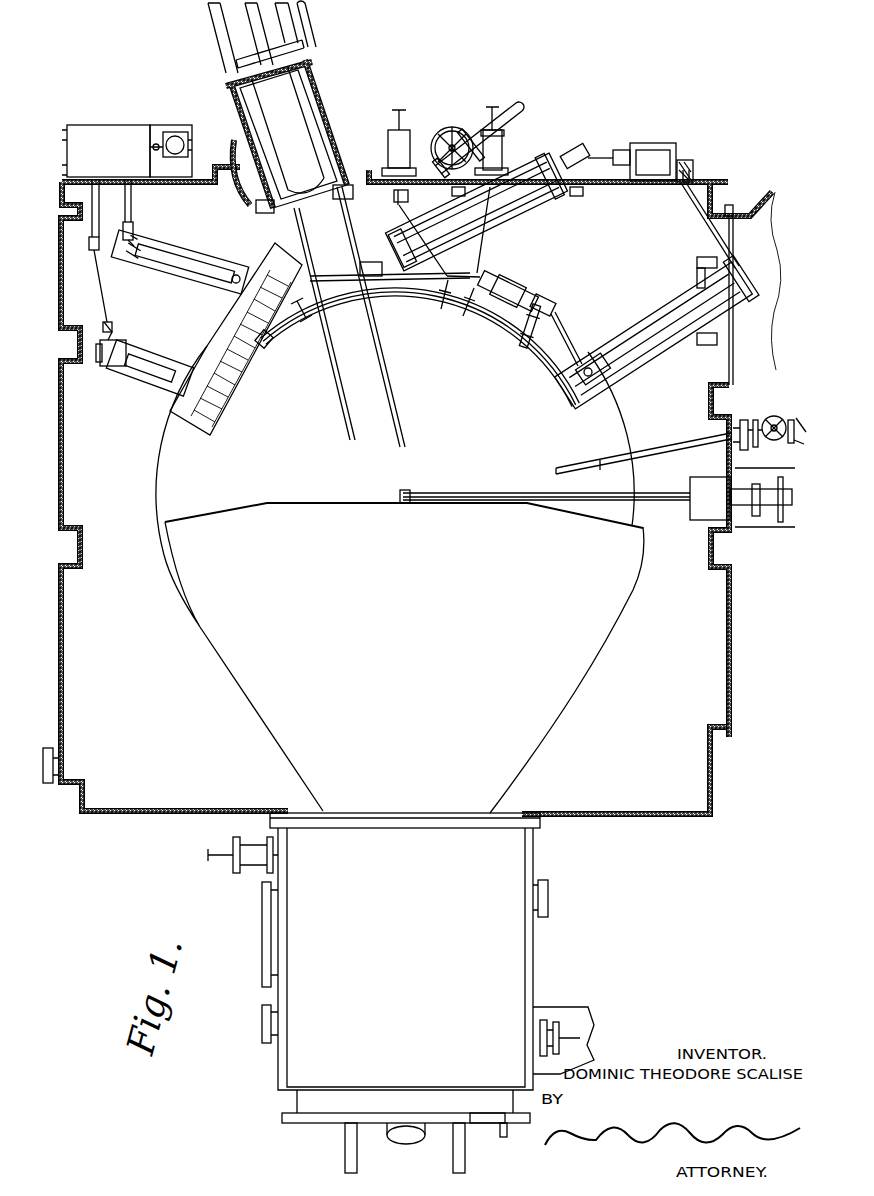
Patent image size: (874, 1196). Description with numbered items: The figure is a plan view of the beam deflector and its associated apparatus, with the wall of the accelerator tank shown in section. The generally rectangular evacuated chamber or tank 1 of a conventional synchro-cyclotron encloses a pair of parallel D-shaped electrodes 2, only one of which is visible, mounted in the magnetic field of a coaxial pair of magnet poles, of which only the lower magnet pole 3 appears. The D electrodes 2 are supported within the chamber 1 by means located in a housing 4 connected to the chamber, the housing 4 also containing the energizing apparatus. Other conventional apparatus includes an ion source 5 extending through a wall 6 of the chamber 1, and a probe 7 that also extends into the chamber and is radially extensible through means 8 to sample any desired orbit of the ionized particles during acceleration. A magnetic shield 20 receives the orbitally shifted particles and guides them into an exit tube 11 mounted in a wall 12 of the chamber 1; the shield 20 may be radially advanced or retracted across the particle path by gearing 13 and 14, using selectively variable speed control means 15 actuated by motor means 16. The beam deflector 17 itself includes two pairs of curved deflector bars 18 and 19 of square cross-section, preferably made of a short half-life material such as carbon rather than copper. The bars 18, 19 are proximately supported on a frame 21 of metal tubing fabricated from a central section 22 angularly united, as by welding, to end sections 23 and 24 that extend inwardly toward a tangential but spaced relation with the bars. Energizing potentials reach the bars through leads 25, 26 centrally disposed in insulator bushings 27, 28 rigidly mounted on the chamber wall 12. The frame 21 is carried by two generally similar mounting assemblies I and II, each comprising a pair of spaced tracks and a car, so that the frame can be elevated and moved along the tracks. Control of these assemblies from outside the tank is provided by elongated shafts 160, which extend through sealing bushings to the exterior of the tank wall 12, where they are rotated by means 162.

The evacuated chamber 1 is at (630, 818).
The D-shaped electrodes 2 is at (404, 650).
The lower magnet pole 3 is at (632, 432).
The housing 4 is at (412, 950).
The ion source 5 is at (434, 493).
The wall 6 is at (732, 640).
The probe 7 is at (558, 467).
The probe extending means 8 is at (780, 416).
The exit tube 11 is at (438, 139).
The wall 12 is at (598, 190).
The gearing 13 is at (135, 346).
The gearing 14 is at (132, 264).
The selectively variable speed control means 15 is at (120, 126).
The motor means 16 is at (178, 131).
The beam deflector 17 is at (443, 326).
The deflector bars 18 is at (300, 328).
The deflector bars 19 is at (293, 320).
The magnetic shield 20 is at (200, 334).
The frame 21 is at (558, 300).
The central section 22 is at (482, 276).
The end section 23 is at (582, 360).
The end section 24 is at (326, 272).
The lead 25 is at (398, 113).
The lead 26 is at (492, 113).
The insulator bushing 27 is at (381, 150).
The insulator bushing 28 is at (519, 138).
The elongated shafts 160 is at (686, 210).
The rotating means 162 is at (657, 133).
The mounting assembly I is at (522, 229).
The mounting assembly II is at (655, 299).